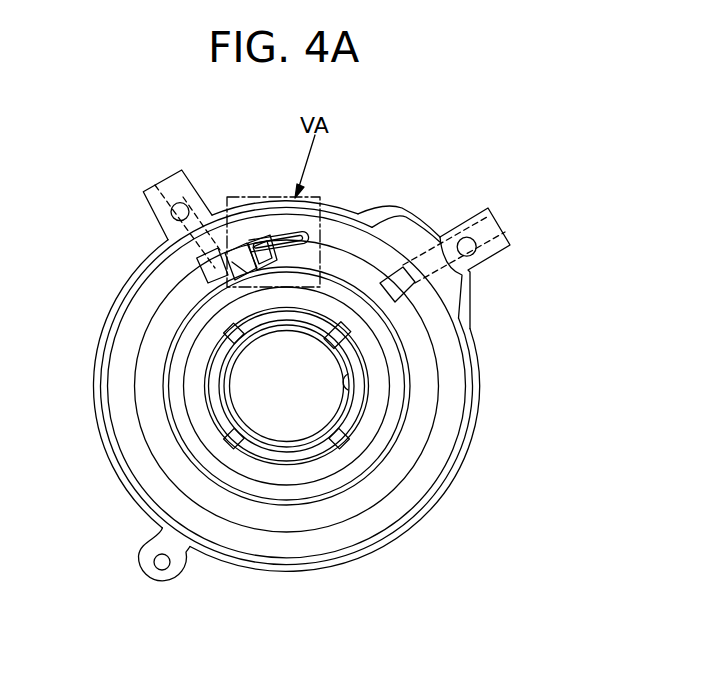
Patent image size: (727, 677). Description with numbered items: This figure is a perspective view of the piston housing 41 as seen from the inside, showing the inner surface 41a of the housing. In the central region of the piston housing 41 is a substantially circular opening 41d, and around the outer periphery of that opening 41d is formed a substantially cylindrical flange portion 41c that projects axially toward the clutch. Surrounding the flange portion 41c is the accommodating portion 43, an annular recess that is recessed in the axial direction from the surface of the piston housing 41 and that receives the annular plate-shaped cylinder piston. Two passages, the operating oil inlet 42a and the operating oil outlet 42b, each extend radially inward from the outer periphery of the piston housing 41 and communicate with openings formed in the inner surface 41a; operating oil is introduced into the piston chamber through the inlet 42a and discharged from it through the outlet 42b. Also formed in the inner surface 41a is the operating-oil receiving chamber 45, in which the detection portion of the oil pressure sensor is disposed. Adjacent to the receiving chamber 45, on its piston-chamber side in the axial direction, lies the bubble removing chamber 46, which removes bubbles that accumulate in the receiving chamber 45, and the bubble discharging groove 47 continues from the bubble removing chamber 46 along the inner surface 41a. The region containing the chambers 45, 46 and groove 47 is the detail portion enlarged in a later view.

The piston housing 41 is at (352, 212).
The inner surface 41a is at (155, 357).
The flange portion 41c is at (360, 405).
The opening 41d is at (340, 382).
The operating oil inlet 42a is at (152, 175).
The operating oil outlet 42b is at (497, 219).
The accommodating portion 43 is at (352, 455).
The operating-oil receiving chamber 45 is at (237, 256).
The bubble removing chamber 46 is at (256, 243).
The bubble discharging groove 47 is at (303, 232).